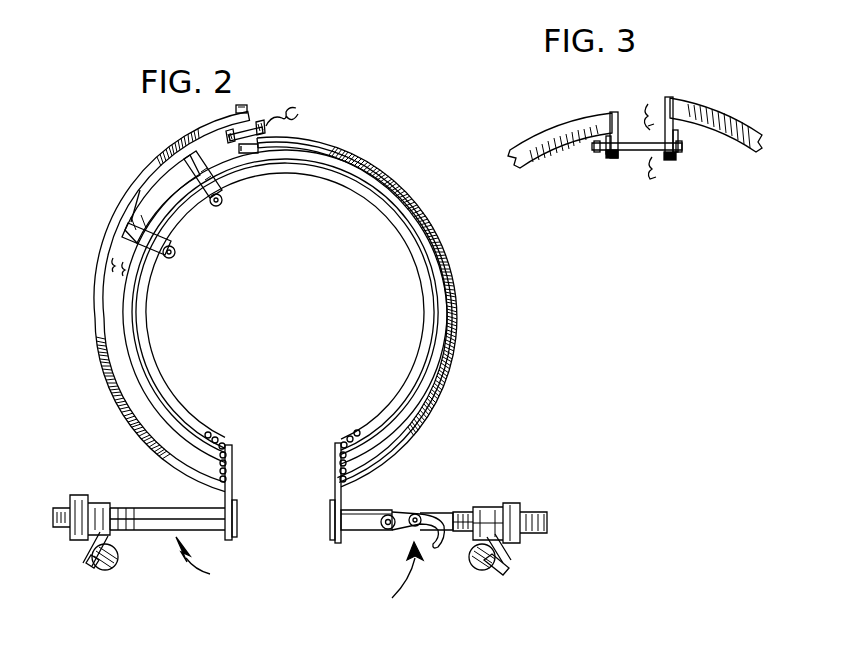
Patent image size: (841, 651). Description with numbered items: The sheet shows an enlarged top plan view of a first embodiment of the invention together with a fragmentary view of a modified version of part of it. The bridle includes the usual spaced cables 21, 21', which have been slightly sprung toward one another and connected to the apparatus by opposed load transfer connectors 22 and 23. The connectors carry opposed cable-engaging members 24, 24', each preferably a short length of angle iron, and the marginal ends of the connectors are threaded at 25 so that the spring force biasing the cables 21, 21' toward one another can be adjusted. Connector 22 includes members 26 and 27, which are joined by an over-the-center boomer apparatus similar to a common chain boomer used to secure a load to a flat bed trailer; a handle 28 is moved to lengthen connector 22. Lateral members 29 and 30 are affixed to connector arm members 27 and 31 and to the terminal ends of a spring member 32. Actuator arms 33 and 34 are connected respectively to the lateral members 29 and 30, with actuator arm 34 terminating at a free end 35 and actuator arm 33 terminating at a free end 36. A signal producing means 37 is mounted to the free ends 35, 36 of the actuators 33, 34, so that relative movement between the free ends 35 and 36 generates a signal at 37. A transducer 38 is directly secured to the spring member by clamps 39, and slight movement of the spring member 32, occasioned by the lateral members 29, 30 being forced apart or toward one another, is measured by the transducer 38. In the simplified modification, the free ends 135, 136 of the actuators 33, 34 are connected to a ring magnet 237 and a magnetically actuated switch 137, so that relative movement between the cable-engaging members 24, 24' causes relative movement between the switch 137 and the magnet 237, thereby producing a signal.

In FIG. 2, the cable 21 is at (440, 591).
In FIG. 2, the cable 21' is at (123, 577).
In FIG. 2, the load transfer connector 22 is at (390, 582).
In FIG. 2, the load transfer connector 23 is at (208, 564).
In FIG. 2, the cable-engaging member 24 is at (506, 578).
In FIG. 2, the cable-engaging member 24' is at (46, 576).
In FIG. 2, the threaded marginal end 25 is at (548, 520).
In FIG. 2, the member 26 is at (433, 515).
In FIG. 2, the member 27 is at (386, 512).
In FIG. 2, the handle 28 is at (397, 533).
In FIG. 2, the lateral member 29 is at (332, 498).
In FIG. 2, the lateral member 30 is at (233, 490).
In FIG. 2, the connector arm member 31 is at (156, 508).
In FIG. 2, the spring member 32 is at (418, 298).
In FIG. 2, the actuator arm 33 is at (456, 300).
In FIG. 3, the actuator arm 33 is at (760, 122).
In FIG. 2, the actuator arm 34 is at (95, 300).
In FIG. 3, the actuator arm 34 is at (533, 128).
In FIG. 2, the free end 35 is at (245, 106).
In FIG. 2, the free end 36 is at (253, 154).
In FIG. 2, the signal producing means 37 is at (232, 152).
In FIG. 2, the transducer 38 is at (143, 193).
In FIG. 2, the clamp 39 is at (206, 212).
In FIG. 3, the free end 135 is at (612, 112).
In FIG. 3, the free end 136 is at (675, 97).
In FIG. 3, the magnetically actuated switch 137 is at (634, 150).
In FIG. 3, the ring magnet 237 is at (610, 158).